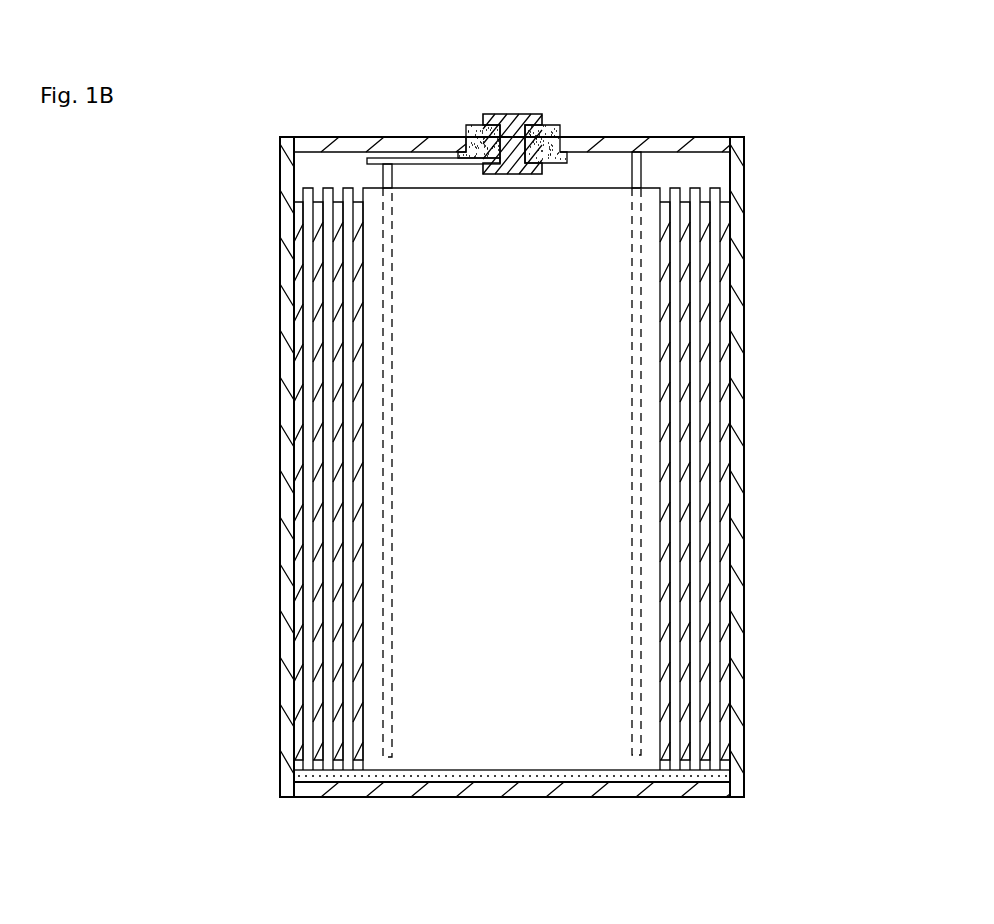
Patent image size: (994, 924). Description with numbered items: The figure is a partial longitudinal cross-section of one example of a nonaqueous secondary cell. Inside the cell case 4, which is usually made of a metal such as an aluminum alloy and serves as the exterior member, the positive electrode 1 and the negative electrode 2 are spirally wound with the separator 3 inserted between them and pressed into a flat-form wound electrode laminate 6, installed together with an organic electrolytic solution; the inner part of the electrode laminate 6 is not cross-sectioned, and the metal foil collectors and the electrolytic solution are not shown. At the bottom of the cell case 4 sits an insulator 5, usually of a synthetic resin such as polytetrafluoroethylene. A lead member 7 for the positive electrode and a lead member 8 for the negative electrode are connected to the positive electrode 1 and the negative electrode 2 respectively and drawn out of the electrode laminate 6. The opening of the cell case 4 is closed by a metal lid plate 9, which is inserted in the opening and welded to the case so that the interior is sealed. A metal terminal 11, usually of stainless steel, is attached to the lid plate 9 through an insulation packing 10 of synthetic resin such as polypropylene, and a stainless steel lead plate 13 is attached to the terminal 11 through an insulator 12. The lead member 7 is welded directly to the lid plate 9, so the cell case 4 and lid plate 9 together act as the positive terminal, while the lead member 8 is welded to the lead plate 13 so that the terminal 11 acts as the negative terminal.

The positive electrode 1 is at (299, 400).
The negative electrode 2 is at (320, 545).
The separator 3 is at (306, 465).
The cell case 4 is at (740, 352).
The insulator 5 is at (456, 797).
The flat-form wound electrode laminate 6 is at (435, 332).
The lead member for a positive electrode 7 is at (636, 178).
The lead member for a negative electrode 8 is at (385, 180).
The lid plate 9 is at (672, 145).
The insulation packing 10 is at (557, 125).
The metal terminal 11 is at (520, 113).
The insulator 12 is at (467, 145).
The lead plate 13 is at (380, 152).